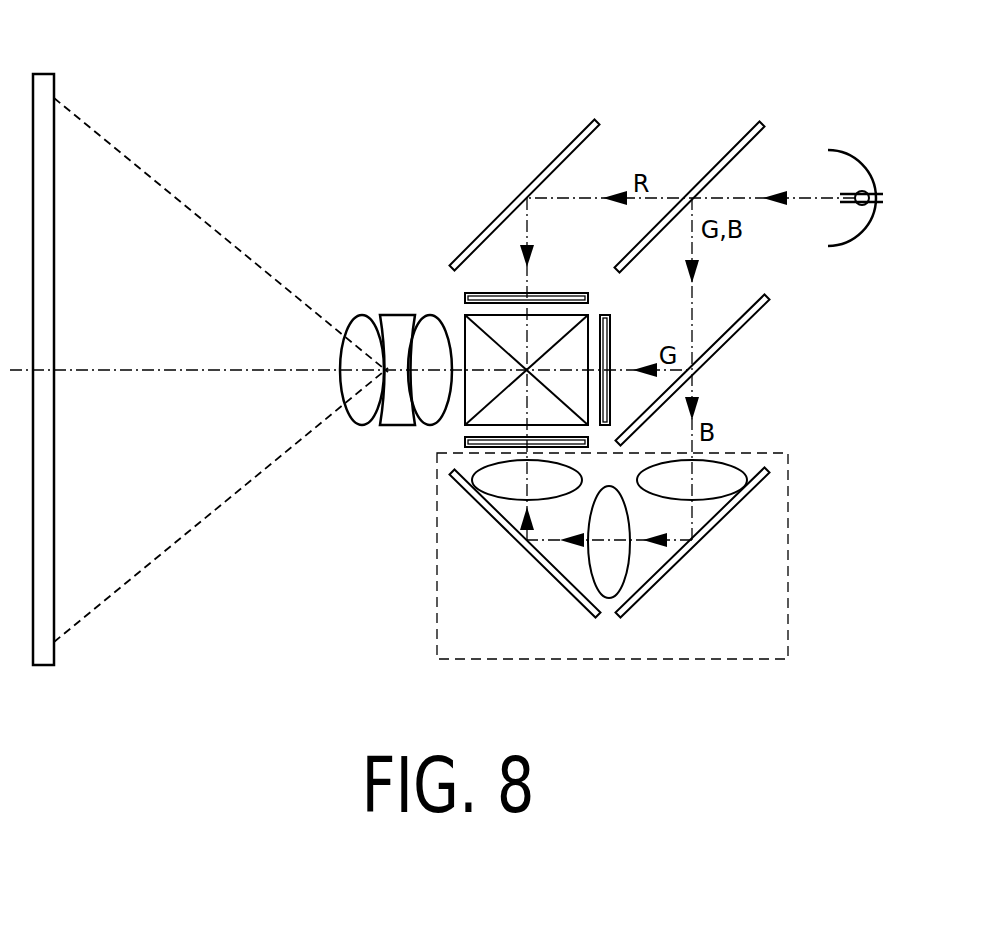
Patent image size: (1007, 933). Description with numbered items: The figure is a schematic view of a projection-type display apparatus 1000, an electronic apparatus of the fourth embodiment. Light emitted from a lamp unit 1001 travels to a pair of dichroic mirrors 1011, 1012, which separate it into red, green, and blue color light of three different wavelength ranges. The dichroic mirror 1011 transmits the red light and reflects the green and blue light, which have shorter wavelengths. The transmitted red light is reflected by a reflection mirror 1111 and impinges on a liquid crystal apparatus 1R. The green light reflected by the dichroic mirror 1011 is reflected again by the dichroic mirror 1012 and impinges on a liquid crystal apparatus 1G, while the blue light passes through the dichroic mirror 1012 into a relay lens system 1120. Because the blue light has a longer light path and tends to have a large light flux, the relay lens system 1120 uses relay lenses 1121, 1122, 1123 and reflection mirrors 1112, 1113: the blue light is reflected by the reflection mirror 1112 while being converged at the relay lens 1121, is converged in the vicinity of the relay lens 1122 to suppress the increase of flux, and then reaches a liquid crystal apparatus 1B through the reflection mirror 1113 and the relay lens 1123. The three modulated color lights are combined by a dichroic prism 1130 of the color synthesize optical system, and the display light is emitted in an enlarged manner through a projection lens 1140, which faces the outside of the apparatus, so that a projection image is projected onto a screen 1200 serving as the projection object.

The projection-type display apparatus 1000 is at (614, 74).
The lamp unit 1001 is at (858, 190).
The dichroic mirror 1011 is at (730, 155).
The dichroic mirror 1012 is at (730, 340).
The reflection mirror 1111 is at (565, 155).
The reflection mirror 1112 is at (643, 602).
The reflection mirror 1113 is at (568, 592).
The relay lens system 1120 is at (790, 510).
The relay lens 1121 is at (713, 492).
The relay lens 1122 is at (627, 573).
The relay lens 1123 is at (500, 487).
The dichroic prism 1130 is at (478, 316).
The projection lens 1140 is at (342, 300).
The screen 1200 is at (54, 657).
The liquid crystal apparatus 1R is at (500, 293).
The liquid crystal apparatus 1G is at (610, 340).
The liquid crystal apparatus 1B is at (465, 440).